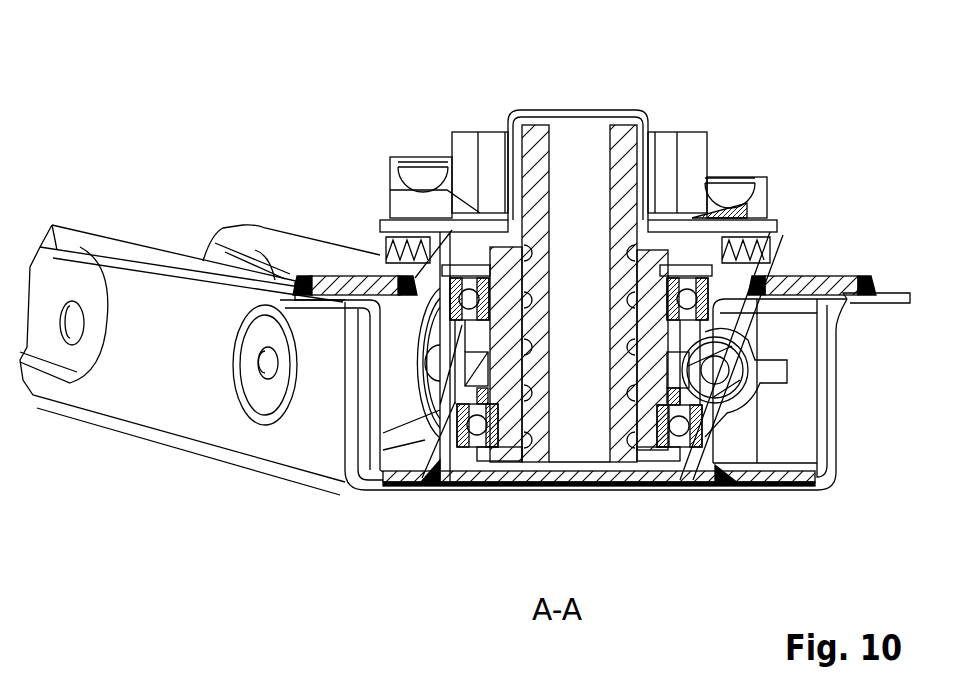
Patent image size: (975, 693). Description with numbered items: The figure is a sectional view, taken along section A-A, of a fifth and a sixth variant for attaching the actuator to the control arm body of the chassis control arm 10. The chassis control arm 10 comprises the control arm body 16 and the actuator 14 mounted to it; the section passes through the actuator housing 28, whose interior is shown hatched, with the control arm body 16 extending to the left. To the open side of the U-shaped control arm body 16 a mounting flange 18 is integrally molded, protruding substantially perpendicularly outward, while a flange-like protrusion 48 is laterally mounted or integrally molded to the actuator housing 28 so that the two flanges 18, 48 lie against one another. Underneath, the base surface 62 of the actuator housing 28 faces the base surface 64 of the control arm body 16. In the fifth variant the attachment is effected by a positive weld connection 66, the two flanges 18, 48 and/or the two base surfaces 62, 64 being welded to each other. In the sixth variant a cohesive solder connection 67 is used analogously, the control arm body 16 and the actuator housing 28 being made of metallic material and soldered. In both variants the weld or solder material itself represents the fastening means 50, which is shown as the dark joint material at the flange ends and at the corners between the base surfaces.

The chassis control arm 10 is at (88, 92).
The actuator 14 is at (754, 92).
The control arm body 16 is at (177, 403).
The mounting flange 18 is at (316, 300).
The actuator housing 28 is at (443, 395).
The flange-like protrusion 48 is at (373, 280).
The fastening means 50 is at (308, 280).
The weld connection 66 is at (873, 278).
The solder connection 67 is at (440, 473).
The base surface of the actuator housing 62 is at (670, 475).
The base surface of the control arm body 64 is at (640, 488).